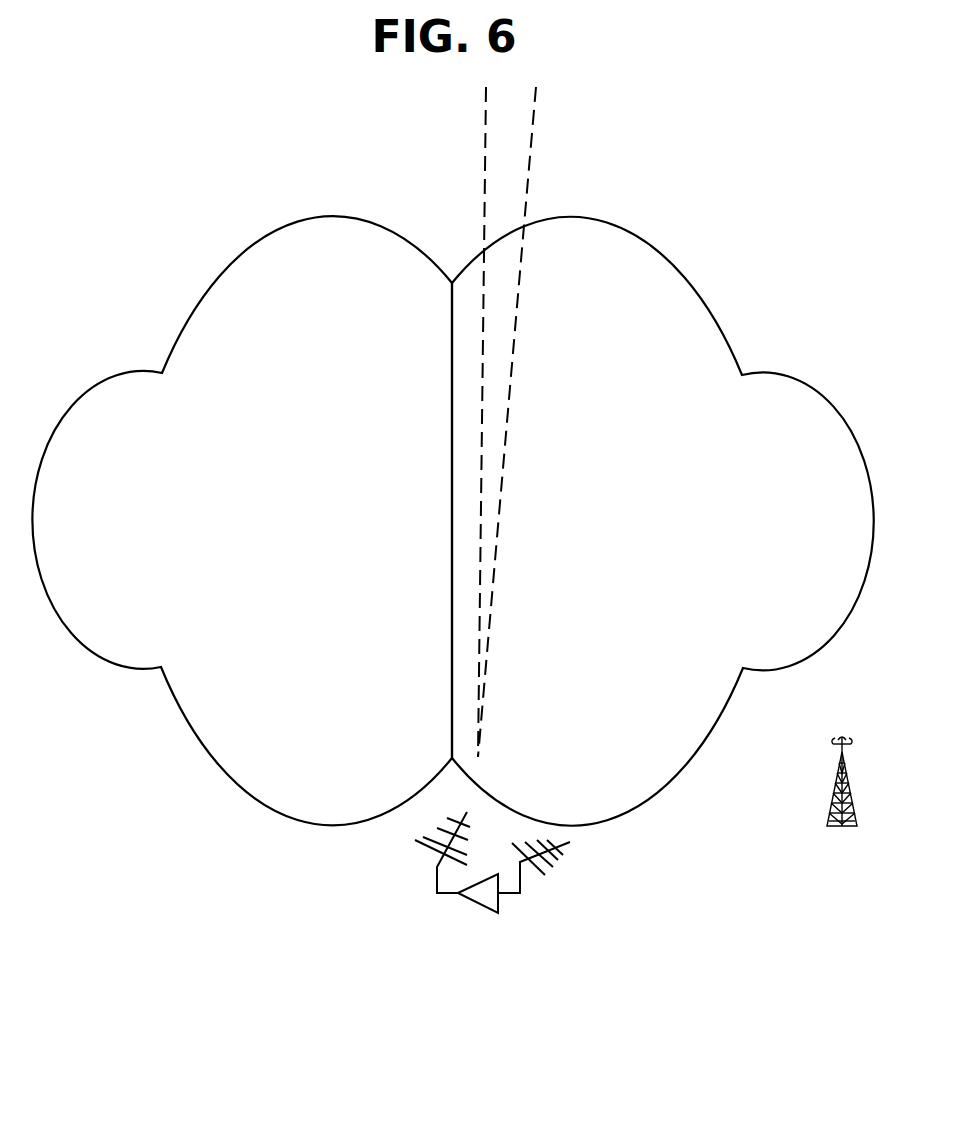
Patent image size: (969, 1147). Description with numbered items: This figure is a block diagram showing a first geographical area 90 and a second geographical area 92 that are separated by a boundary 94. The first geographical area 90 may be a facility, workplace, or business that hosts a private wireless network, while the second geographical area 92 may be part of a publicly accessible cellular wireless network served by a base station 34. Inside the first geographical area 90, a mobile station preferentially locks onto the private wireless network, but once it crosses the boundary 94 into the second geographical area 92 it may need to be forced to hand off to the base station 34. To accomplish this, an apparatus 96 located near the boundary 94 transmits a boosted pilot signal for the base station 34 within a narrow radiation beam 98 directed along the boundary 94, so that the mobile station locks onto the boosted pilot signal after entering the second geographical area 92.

The first geographical area 90 is at (137, 527).
The second geographical area 92 is at (740, 527).
The boundary 94 is at (452, 313).
The apparatus 96 is at (470, 898).
The narrow radiation beam 98 is at (503, 473).
The base station 34 is at (842, 798).